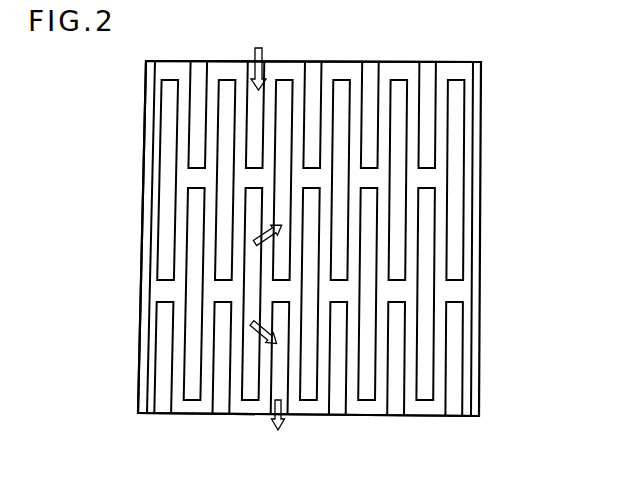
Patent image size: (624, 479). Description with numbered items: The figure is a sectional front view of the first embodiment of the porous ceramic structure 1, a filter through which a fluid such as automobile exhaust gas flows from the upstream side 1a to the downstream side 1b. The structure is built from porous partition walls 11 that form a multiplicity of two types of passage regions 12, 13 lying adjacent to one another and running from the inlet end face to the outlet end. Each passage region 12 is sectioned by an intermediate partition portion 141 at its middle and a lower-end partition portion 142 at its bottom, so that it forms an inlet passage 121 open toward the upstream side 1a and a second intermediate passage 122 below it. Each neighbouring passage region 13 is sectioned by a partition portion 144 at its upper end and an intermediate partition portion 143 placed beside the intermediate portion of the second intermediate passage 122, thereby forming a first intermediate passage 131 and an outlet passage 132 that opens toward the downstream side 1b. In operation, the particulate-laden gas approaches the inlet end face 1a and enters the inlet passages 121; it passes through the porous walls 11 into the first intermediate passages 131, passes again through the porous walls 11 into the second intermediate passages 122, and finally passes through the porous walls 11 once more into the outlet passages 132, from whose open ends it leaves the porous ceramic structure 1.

The porous ceramic structure 1 is at (452, 55).
The upstream side 1a is at (217, 62).
The downstream side 1b is at (198, 417).
The porous partition walls 11 is at (456, 108).
The passage regions 12 is at (372, 89).
The passage regions 13 is at (345, 93).
The inlet passage 121 is at (152, 102).
The second intermediate passage 122 is at (152, 247).
The first intermediate passage 131 is at (172, 125).
The outlet passage 132 is at (162, 352).
The intermediate partition portion 141 is at (172, 176).
The lower-end partition portion 142 is at (182, 405).
The intermediate partition portion 143 is at (168, 290).
The partition portion 144 is at (150, 82).